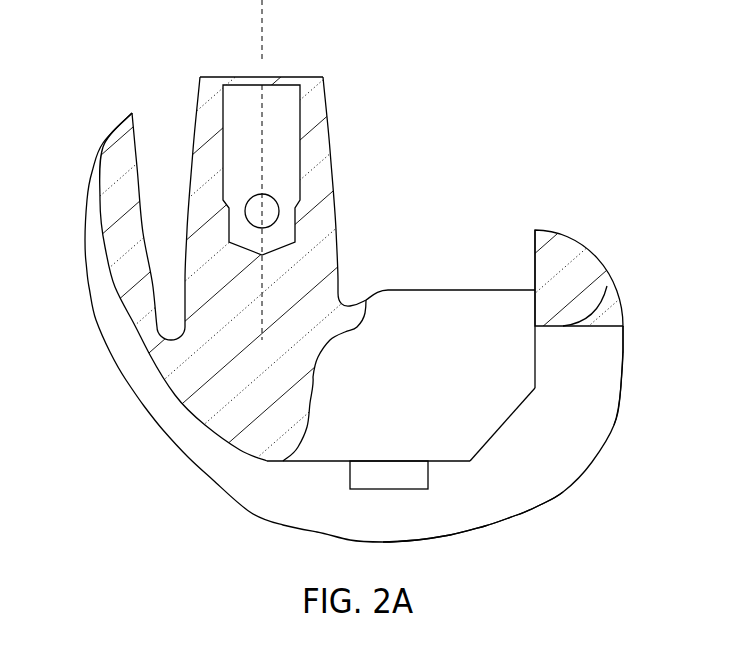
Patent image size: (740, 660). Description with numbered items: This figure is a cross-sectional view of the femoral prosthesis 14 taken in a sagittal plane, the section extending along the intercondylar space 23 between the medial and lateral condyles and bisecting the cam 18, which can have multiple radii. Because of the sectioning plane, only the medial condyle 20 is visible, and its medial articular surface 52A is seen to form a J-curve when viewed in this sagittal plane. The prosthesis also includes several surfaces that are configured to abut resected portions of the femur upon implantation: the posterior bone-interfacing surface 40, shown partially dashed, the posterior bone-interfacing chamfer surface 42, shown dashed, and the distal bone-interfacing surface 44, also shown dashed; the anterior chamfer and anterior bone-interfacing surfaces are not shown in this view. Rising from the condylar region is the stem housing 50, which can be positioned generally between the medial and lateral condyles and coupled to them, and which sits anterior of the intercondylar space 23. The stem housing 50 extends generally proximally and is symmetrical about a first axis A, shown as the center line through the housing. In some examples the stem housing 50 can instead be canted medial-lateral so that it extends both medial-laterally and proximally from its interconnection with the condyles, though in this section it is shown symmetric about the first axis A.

The femoral prosthesis 14 is at (508, 98).
The stem housing 50 is at (318, 173).
The first axis A is at (262, 37).
The cam 18 is at (575, 280).
The posterior bone-interfacing surface 40 is at (535, 352).
The posterior bone-interfacing chamfer surface 42 is at (518, 415).
The distal bone-interfacing surface 44 is at (388, 458).
The medial condyle 20 is at (597, 423).
The medial articular surface 52A is at (625, 338).
The intercondylar space 23 is at (497, 495).